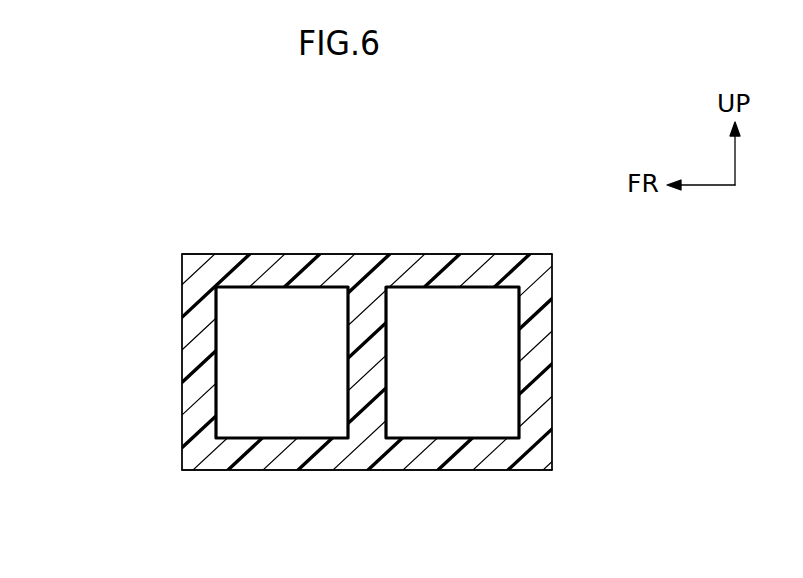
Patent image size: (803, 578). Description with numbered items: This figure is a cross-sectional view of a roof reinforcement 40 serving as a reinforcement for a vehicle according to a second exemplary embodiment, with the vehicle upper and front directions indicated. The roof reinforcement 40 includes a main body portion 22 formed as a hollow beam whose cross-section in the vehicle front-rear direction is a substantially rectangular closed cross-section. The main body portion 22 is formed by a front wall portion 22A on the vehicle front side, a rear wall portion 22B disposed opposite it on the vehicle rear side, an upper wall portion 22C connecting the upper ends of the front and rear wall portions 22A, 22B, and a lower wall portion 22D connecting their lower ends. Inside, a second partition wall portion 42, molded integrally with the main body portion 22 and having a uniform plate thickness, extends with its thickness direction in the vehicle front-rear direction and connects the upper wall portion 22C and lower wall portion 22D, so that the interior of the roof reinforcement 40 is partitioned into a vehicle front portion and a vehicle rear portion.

The roof reinforcement 40 is at (95, 290).
The main body portion 22 is at (182, 382).
The front wall portion 22A is at (182, 428).
The rear wall portion 22B is at (553, 365).
The upper wall portion 22C is at (462, 253).
The lower wall portion 22D is at (450, 472).
The second partition wall portion 42 is at (387, 357).